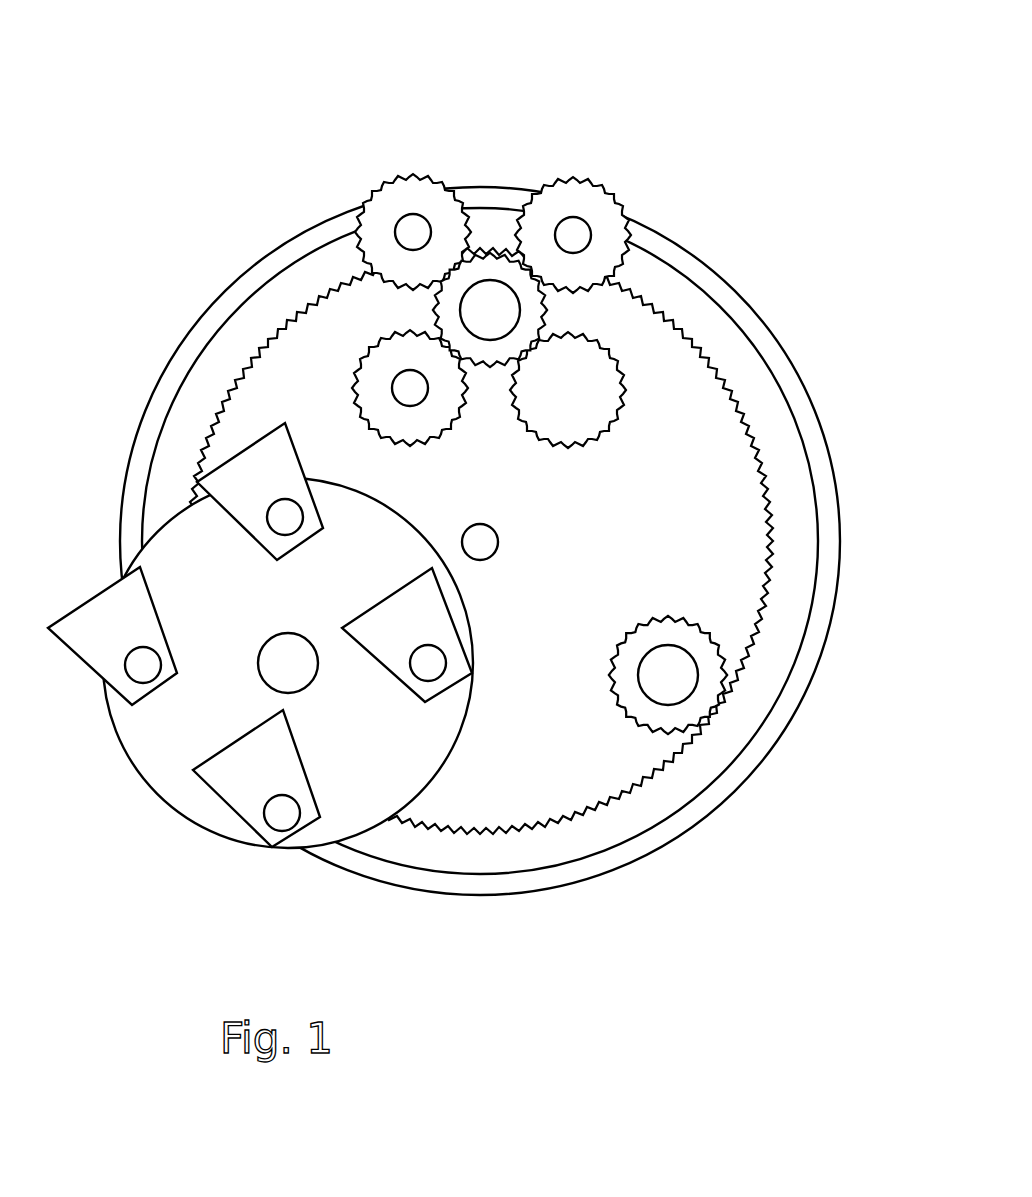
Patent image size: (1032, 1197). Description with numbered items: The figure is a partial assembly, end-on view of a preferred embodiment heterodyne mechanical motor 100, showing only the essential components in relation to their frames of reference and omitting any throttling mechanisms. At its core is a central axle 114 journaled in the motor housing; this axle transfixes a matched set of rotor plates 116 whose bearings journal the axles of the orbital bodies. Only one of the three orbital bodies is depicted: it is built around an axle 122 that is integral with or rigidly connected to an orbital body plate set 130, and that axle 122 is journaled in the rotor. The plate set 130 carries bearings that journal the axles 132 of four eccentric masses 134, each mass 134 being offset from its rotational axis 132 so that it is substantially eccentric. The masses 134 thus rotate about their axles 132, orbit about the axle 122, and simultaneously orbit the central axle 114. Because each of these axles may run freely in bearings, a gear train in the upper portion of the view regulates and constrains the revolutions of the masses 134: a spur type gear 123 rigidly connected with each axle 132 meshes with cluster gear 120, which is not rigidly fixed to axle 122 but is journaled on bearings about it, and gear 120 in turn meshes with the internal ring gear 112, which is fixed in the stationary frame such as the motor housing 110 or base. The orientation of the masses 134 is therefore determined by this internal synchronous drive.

The heterodyne mechanical motor 100 is at (490, 85).
The housing 110 is at (781, 367).
The internal ring gear 112 is at (697, 303).
The central axle 114 is at (493, 542).
The rotor plates 116 is at (732, 483).
The cluster gear 120 is at (485, 353).
The eccentric mass axle 122 is at (500, 313).
The spur type gear 123 is at (373, 208).
The orbital body plate set 130 is at (197, 805).
The axles 132 is at (414, 231).
The eccentric masses 134 is at (285, 491).